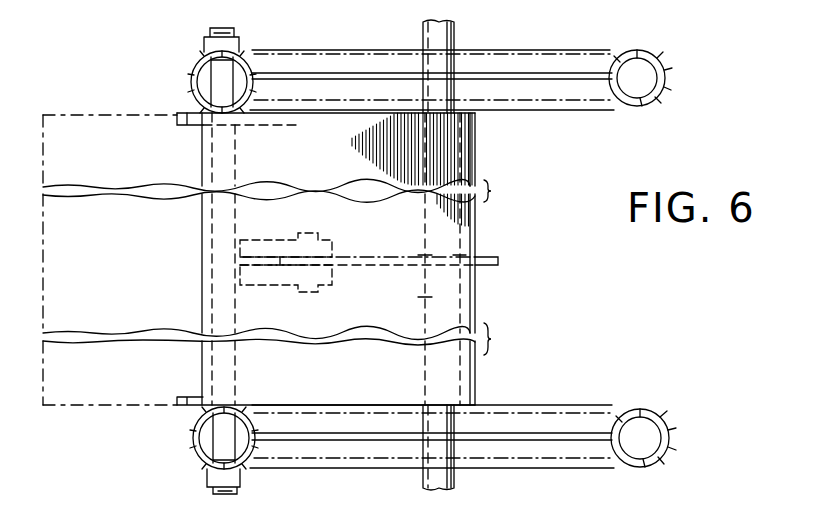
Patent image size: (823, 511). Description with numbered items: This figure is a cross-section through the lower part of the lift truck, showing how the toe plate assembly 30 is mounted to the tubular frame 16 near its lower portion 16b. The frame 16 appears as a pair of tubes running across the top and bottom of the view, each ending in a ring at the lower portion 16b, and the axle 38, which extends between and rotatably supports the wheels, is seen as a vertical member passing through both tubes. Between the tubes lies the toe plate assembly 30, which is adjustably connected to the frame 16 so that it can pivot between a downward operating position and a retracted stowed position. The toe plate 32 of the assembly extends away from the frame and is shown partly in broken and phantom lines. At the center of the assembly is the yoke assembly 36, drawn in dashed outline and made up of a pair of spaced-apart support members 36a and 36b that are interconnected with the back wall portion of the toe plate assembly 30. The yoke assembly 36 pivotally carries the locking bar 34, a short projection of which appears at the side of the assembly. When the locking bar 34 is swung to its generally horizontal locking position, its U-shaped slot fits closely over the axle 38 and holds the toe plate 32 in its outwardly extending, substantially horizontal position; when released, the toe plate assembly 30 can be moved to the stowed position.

The tubular frame 16 is at (592, 47).
The lower portion 16b is at (190, 80).
The toe plate assembly 30 is at (485, 217).
The toe plate 32 is at (510, 302).
The locking bar 34 is at (500, 258).
The yoke assembly 36 is at (357, 265).
The support member 36a is at (260, 286).
The support member 36b is at (262, 240).
The axle 38 is at (453, 34).